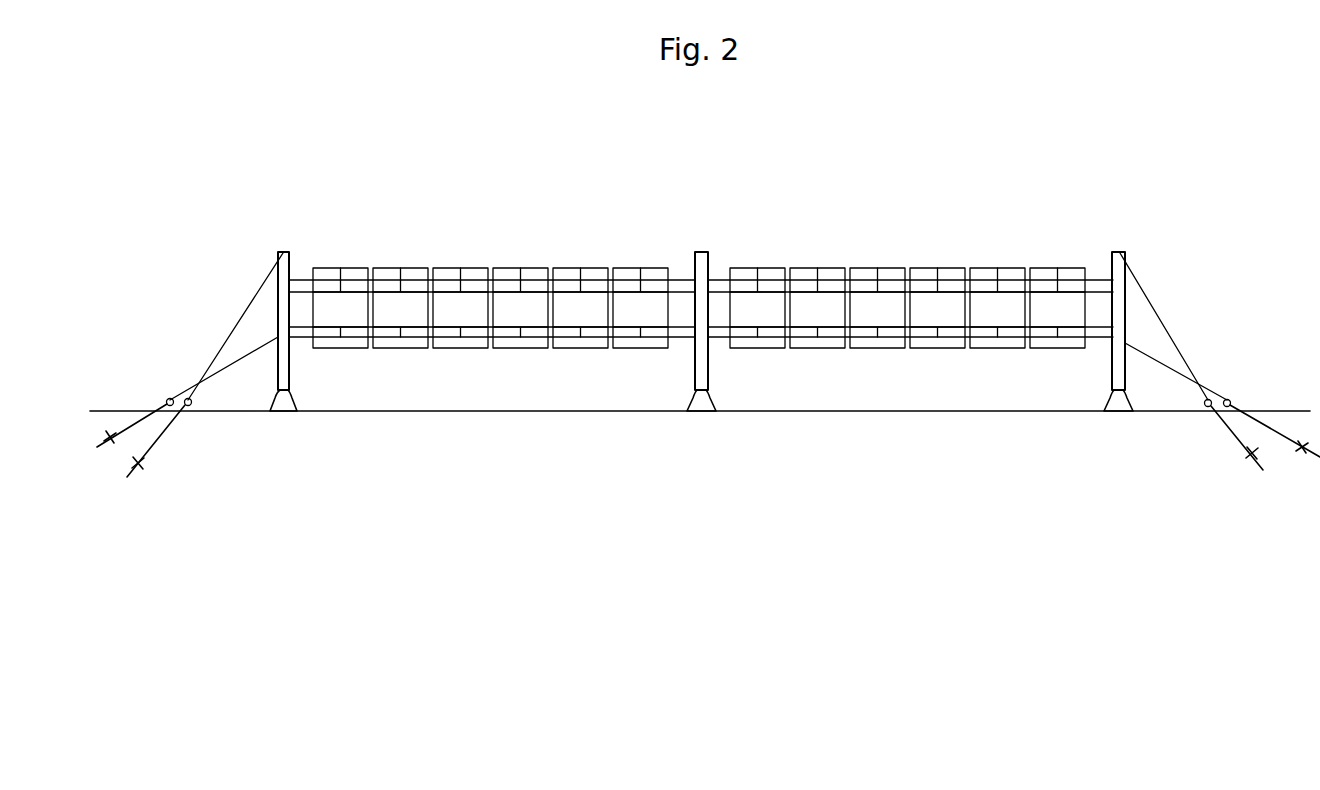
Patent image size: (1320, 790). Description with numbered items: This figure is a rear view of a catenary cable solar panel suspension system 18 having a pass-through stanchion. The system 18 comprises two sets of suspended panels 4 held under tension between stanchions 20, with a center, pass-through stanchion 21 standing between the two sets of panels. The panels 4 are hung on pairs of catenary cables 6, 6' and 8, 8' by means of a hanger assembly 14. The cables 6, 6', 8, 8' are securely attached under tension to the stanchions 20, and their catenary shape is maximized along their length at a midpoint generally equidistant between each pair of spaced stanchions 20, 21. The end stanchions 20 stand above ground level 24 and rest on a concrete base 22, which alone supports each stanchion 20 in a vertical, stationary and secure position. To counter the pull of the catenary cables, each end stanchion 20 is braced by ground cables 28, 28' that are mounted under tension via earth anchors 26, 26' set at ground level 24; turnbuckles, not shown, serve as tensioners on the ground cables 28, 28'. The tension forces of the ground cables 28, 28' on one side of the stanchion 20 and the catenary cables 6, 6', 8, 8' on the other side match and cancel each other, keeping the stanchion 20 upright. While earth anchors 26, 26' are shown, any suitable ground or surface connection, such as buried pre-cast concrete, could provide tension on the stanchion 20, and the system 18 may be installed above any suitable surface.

The panels 4 is at (347, 350).
The cable 6 is at (701, 235).
The cable 6' is at (701, 247).
The cable 8 is at (701, 368).
The cable 8' is at (701, 373).
The hanger assembly 14 is at (350, 268).
The system 18 is at (493, 605).
The stanchion 20 is at (293, 252).
The pass-through stanchion 21 is at (708, 252).
The concrete base 22 is at (284, 412).
The ground level 24 is at (250, 412).
The earth anchor 26 is at (708, 410).
The earth anchor 26' is at (695, 453).
The ground cable 28 is at (698, 374).
The ground cable 28' is at (701, 326).